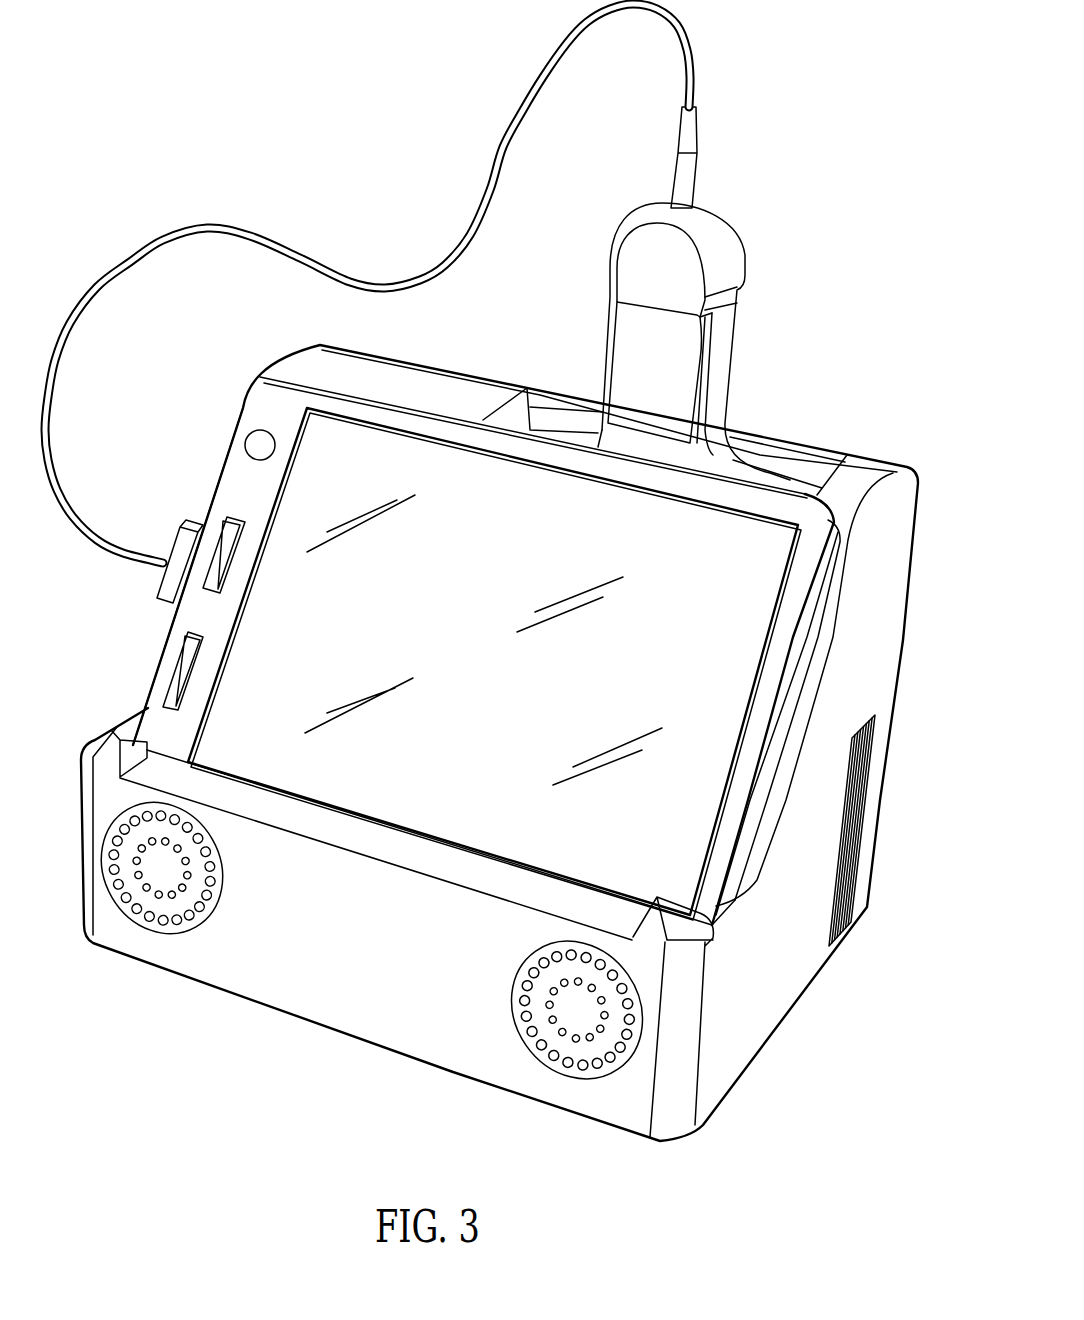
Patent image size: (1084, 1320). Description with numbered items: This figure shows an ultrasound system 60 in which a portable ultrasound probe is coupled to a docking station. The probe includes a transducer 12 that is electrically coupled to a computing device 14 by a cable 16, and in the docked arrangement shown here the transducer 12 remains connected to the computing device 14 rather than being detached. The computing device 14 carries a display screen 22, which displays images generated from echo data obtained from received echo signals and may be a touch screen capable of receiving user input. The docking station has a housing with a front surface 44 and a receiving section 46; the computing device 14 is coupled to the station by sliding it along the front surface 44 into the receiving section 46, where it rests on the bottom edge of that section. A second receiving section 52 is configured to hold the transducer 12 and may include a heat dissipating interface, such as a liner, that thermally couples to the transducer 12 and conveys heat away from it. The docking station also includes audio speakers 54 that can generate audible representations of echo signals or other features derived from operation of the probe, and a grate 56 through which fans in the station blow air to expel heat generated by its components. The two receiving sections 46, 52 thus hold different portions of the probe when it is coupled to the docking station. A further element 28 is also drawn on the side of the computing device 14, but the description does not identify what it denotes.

The ultrasound imaging system 60 is at (203, 126).
The cable 16 is at (313, 249).
The ultrasound probe 12 is at (722, 352).
The probe holder slot 52 is at (784, 470).
The connector 28 is at (158, 580).
The tablet computing device 14 is at (157, 641).
The display screen 22 is at (503, 690).
The housing 44 is at (822, 600).
The speaker 54 is at (133, 925).
The vent 56 is at (850, 887).
The retaining lip 46 is at (735, 870).